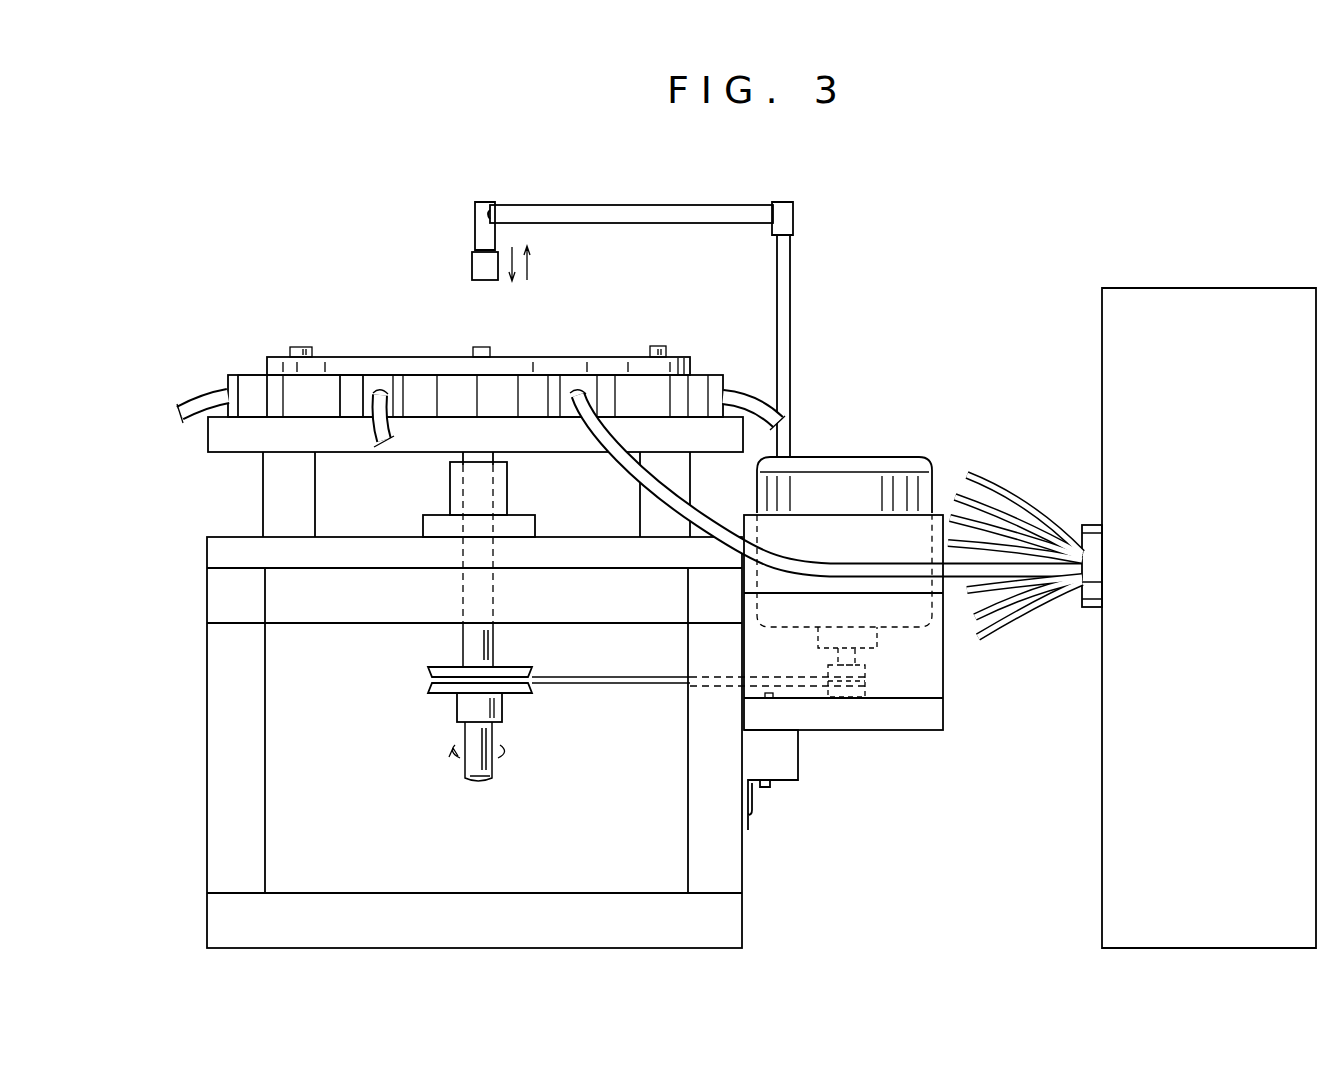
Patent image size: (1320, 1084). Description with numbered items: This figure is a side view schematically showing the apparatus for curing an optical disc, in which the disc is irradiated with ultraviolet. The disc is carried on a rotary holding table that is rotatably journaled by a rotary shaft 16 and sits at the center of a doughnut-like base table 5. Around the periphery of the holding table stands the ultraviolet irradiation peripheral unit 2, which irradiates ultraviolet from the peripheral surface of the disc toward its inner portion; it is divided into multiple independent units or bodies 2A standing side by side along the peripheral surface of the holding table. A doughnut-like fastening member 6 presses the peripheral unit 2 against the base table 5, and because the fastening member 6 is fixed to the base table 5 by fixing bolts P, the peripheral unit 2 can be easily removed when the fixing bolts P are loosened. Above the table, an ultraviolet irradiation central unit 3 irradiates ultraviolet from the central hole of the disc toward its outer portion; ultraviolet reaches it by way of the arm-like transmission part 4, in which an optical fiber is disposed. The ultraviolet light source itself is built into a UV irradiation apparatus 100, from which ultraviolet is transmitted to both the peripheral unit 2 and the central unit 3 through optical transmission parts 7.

The ultraviolet irradiation peripheral unit 2 is at (226, 370).
The units or bodies 2A is at (257, 388).
The ultraviolet irradiation central unit 3 is at (472, 268).
The arm-like transmission part 4 is at (636, 212).
The base table 5 is at (238, 440).
The fastening member 6 is at (568, 365).
The optical transmission parts 7 is at (378, 445).
The rotary shaft 16 is at (468, 640).
The UV irradiation apparatus 100 is at (1212, 609).
The fixing bolts P is at (655, 347).